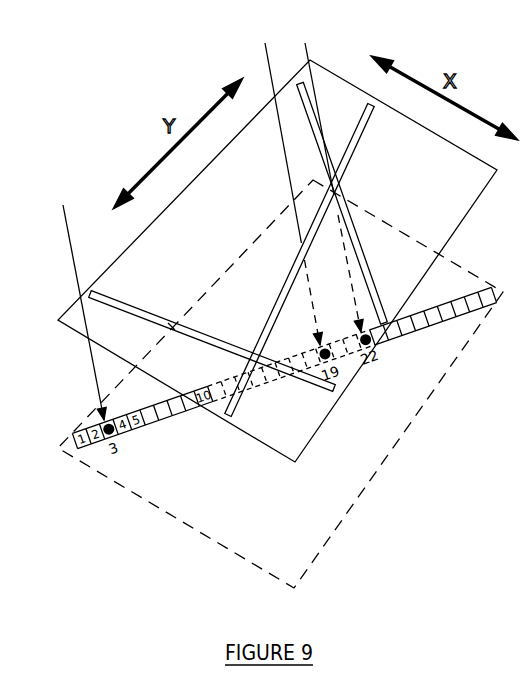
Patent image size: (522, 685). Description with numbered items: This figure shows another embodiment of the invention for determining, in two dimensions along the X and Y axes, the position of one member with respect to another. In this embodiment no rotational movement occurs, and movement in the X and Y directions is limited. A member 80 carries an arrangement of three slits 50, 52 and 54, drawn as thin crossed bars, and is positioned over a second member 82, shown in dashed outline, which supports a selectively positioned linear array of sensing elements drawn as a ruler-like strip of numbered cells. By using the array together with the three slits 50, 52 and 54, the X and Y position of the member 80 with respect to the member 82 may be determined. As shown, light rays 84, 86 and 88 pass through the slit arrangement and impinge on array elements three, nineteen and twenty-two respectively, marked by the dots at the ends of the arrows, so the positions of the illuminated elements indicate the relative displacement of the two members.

The slit 50 is at (112, 297).
The slit 52 is at (276, 301).
The slit 54 is at (356, 153).
The member 80 is at (452, 207).
The member 82 is at (197, 510).
The light ray 84 is at (70, 229).
The light ray 86 is at (265, 58).
The light ray 88 is at (309, 58).